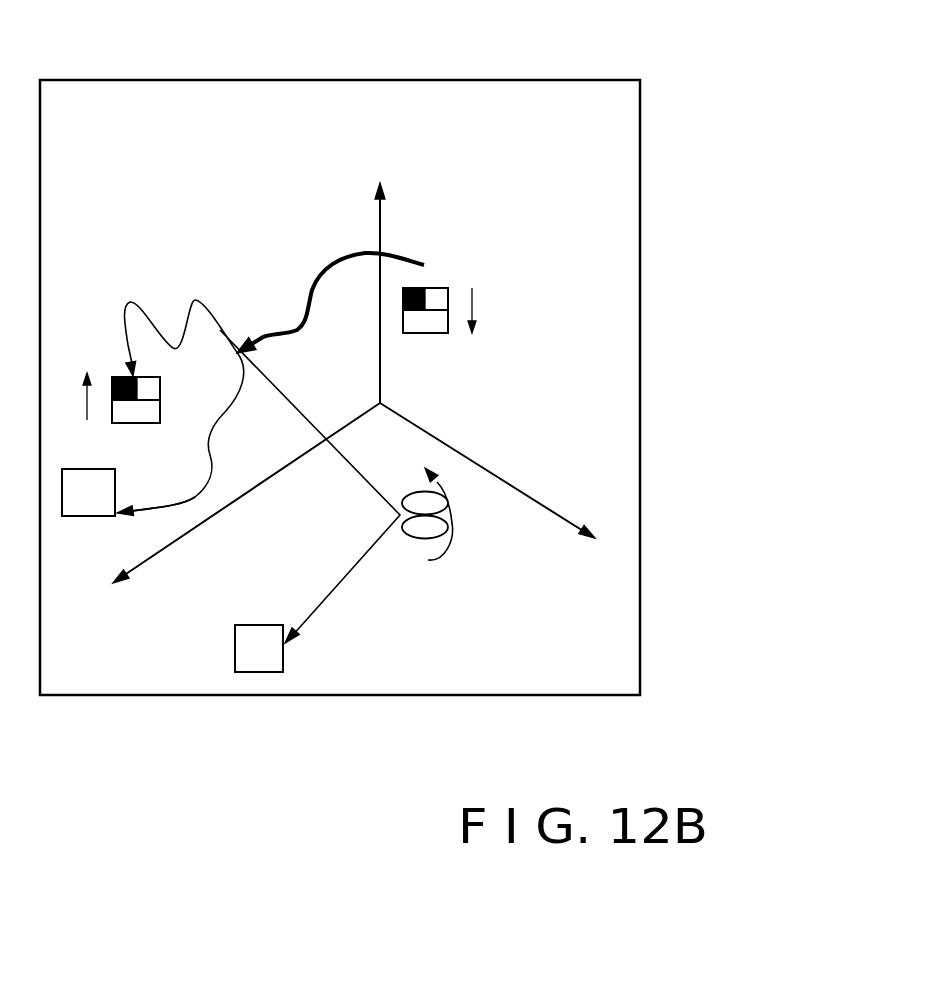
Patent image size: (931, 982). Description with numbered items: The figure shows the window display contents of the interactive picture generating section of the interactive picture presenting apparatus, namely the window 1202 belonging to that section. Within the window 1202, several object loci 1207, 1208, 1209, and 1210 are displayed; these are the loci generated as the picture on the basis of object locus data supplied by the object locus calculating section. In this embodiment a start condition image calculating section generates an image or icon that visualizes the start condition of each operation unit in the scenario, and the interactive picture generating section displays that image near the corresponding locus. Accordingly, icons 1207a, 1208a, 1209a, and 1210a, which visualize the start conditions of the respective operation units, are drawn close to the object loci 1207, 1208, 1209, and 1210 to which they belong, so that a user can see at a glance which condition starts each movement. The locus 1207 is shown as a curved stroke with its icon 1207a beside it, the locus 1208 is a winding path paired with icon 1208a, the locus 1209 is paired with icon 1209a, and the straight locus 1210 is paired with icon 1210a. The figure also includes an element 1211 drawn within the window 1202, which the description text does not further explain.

The window 1202 is at (320, 80).
The object locus 1207 is at (402, 252).
The start condition icon 1207a is at (443, 288).
The object locus 1208 is at (143, 317).
The start condition icon 1208a is at (112, 383).
The object locus 1209 is at (150, 508).
The start condition icon 1209a is at (59, 503).
The object locus 1210 is at (277, 393).
The start condition icon 1210a is at (285, 650).
The rotation indicator 1211 is at (450, 540).